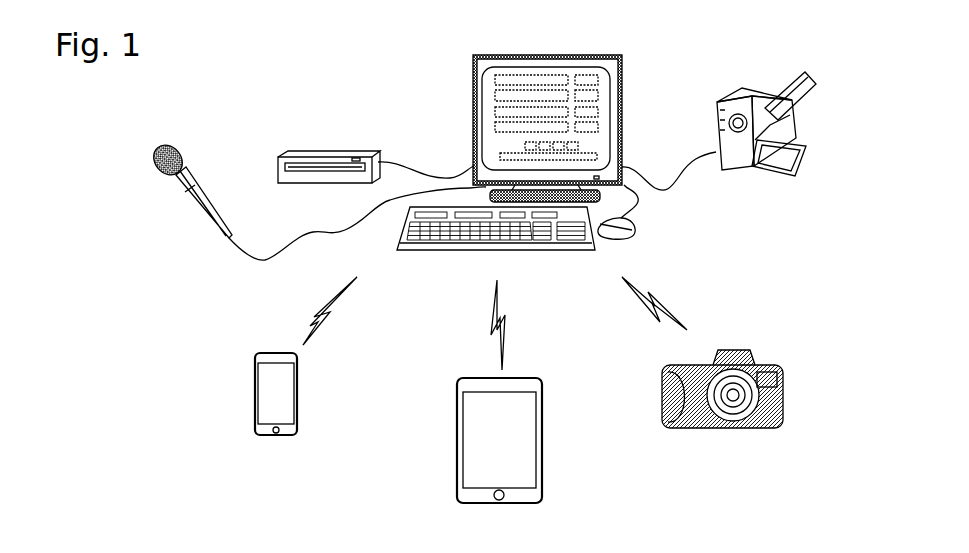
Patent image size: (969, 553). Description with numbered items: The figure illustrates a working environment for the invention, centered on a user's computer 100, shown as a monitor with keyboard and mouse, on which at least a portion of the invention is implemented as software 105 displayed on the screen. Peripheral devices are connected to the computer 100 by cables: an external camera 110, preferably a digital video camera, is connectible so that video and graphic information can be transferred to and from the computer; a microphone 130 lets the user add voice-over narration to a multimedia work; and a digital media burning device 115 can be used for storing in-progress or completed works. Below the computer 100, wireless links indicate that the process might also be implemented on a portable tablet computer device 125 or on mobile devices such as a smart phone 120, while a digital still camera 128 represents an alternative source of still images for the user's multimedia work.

The computer 100 is at (600, 54).
The software 105 is at (516, 72).
The external camera 110 is at (790, 72).
The digital media burning device 115 is at (286, 152).
The smart phone 120 is at (260, 353).
The portable tablet computer device 125 is at (462, 378).
The digital camera 128 is at (768, 362).
The microphone 130 is at (168, 147).